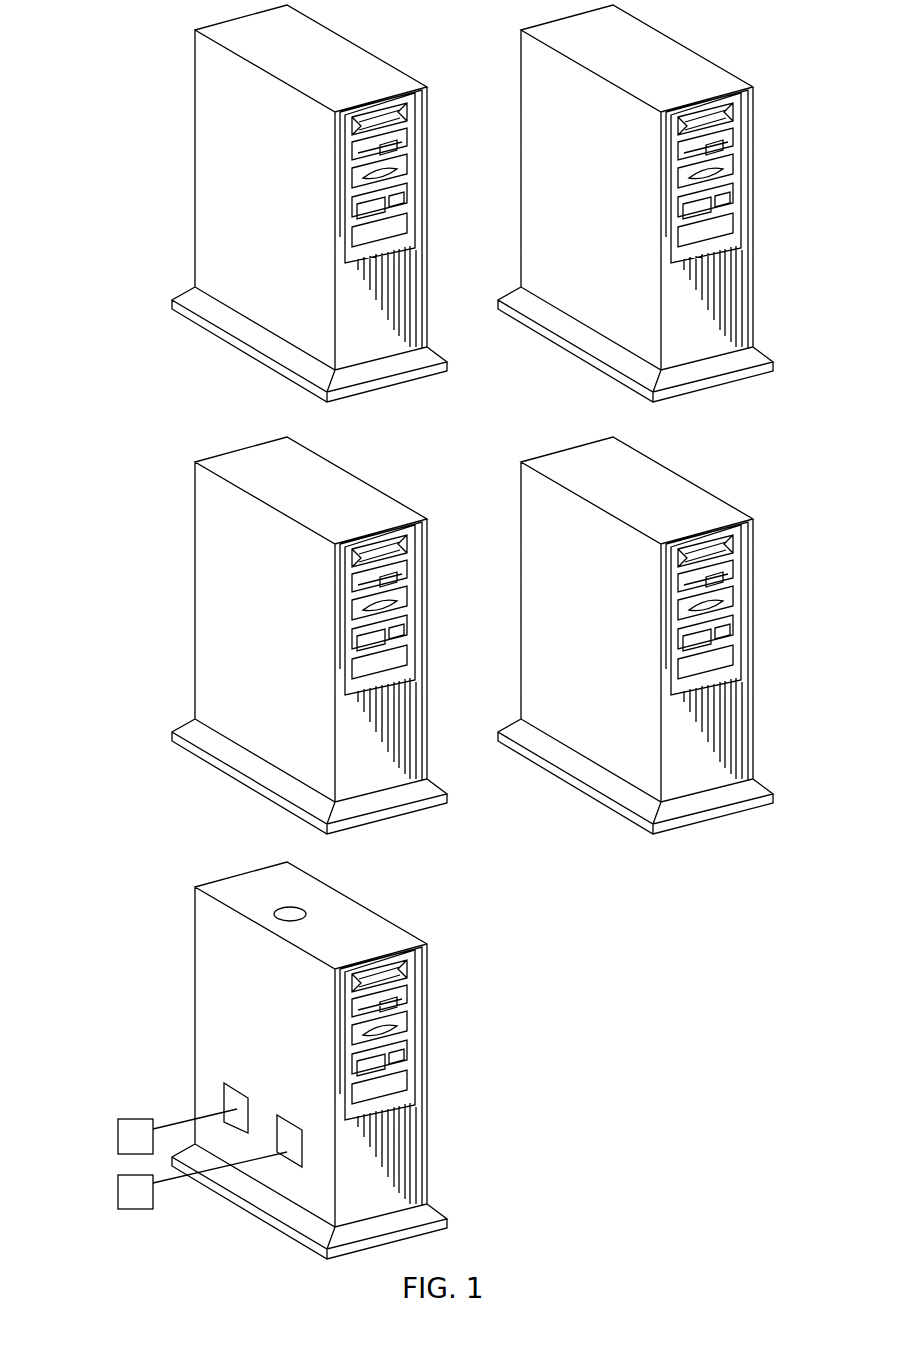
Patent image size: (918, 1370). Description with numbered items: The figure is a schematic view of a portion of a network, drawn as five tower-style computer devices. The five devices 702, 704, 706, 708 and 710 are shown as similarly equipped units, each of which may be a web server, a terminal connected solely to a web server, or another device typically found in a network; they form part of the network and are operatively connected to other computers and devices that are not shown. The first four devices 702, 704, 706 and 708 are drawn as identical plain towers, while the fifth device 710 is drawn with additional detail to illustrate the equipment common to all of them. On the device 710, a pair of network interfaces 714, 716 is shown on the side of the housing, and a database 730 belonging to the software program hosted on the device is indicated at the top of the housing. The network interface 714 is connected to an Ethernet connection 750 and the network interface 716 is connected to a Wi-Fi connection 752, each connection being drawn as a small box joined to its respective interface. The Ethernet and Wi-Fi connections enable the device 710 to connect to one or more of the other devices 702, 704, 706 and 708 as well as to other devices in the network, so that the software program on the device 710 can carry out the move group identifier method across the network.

The device 702 is at (195, 134).
The device 704 is at (755, 197).
The device 706 is at (172, 733).
The device 708 is at (753, 622).
The device 710 is at (195, 1003).
The network interface 714 is at (302, 1141).
The network interface 716 is at (240, 1090).
The database 730 is at (273, 911).
The Ethernet connection 750 is at (118, 1187).
The Wi-Fi connection 752 is at (118, 1126).